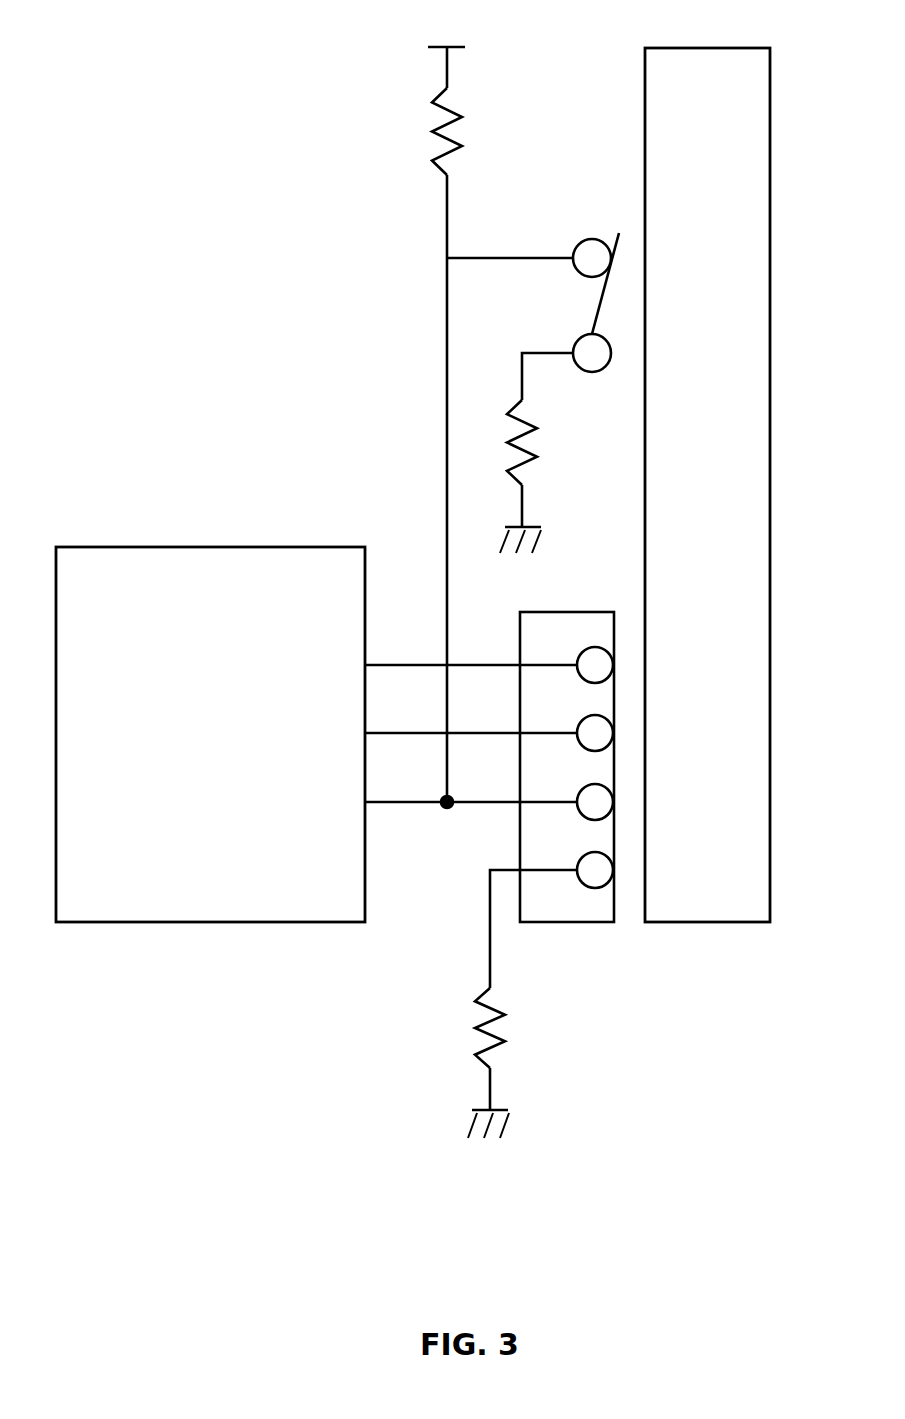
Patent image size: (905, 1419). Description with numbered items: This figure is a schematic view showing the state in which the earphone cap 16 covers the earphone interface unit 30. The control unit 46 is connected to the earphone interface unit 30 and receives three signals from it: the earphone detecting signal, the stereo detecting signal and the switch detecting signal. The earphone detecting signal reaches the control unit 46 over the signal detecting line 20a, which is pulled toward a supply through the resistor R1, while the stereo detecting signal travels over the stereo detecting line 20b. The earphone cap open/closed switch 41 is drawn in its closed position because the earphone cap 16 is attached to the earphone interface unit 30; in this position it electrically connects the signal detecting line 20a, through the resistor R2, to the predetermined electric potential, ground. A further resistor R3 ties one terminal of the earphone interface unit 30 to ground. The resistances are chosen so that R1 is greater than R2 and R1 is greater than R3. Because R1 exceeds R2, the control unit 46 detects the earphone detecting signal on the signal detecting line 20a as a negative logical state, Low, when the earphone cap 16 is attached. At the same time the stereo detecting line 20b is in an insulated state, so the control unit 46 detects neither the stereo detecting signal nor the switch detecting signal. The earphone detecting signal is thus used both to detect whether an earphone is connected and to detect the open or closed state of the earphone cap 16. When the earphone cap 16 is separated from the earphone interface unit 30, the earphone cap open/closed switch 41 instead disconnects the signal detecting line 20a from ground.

The earphone cap 16 is at (738, 47).
The signal detecting line 20a is at (485, 262).
The stereo detecting line 20b is at (485, 733).
The earphone interface unit 30 is at (590, 607).
The earphone cap open/closed switch 41 is at (600, 297).
The control unit 46 is at (304, 546).
The resistor R1 is at (455, 112).
The resistor R2 is at (540, 440).
The resistor R3 is at (500, 1023).